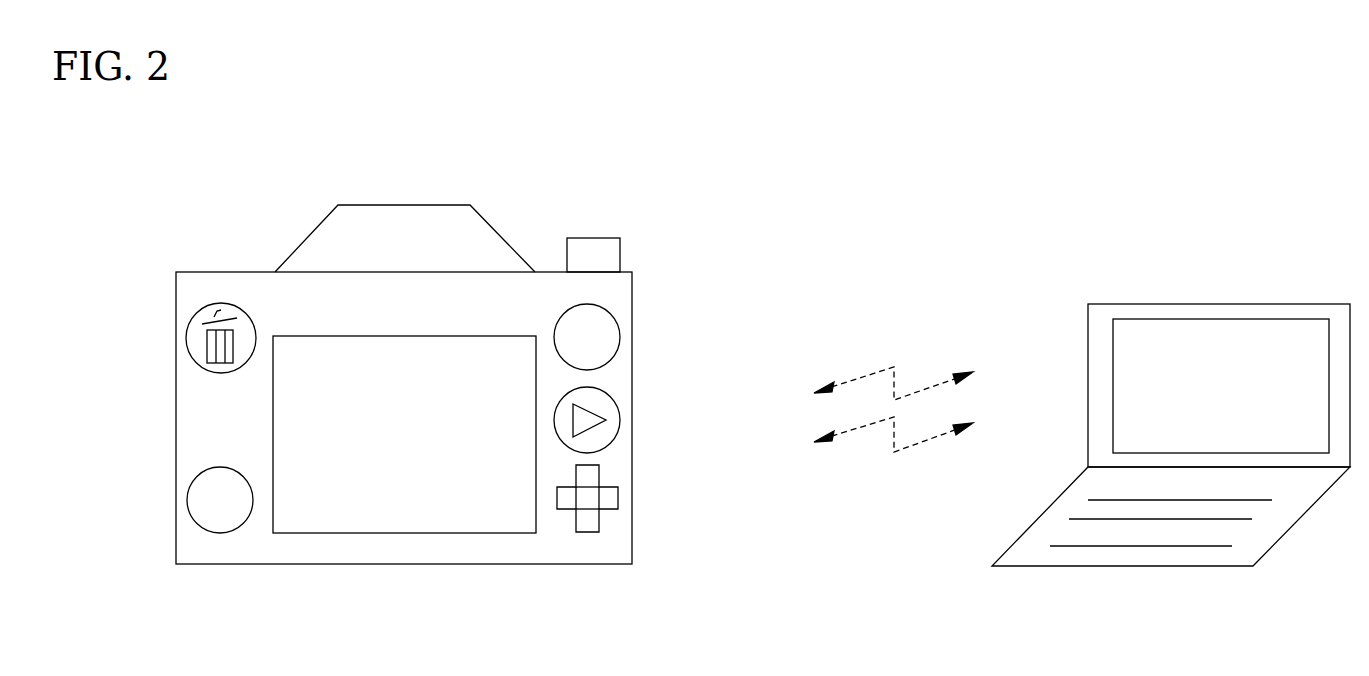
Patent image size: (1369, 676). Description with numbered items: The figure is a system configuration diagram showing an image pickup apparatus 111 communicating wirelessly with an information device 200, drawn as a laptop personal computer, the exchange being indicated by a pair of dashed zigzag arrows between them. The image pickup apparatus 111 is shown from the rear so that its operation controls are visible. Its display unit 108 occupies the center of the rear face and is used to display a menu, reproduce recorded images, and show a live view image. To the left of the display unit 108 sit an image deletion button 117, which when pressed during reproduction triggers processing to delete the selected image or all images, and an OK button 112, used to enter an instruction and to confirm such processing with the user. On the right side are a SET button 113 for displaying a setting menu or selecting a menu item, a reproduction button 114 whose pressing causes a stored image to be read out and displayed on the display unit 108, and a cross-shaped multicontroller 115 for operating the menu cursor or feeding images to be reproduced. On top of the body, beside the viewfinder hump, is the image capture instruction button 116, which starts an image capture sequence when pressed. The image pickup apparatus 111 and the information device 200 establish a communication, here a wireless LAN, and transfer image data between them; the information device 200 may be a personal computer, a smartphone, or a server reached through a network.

The display unit 108 is at (408, 336).
The image pickup apparatus 111 is at (176, 295).
The OK button 112 is at (187, 500).
The SET button 113 is at (620, 337).
The reproduction button 114 is at (620, 420).
The multicontroller 115 is at (618, 497).
The image capture instruction button 116 is at (620, 250).
The image deletion button 117 is at (186, 340).
The information device 200 is at (1275, 543).